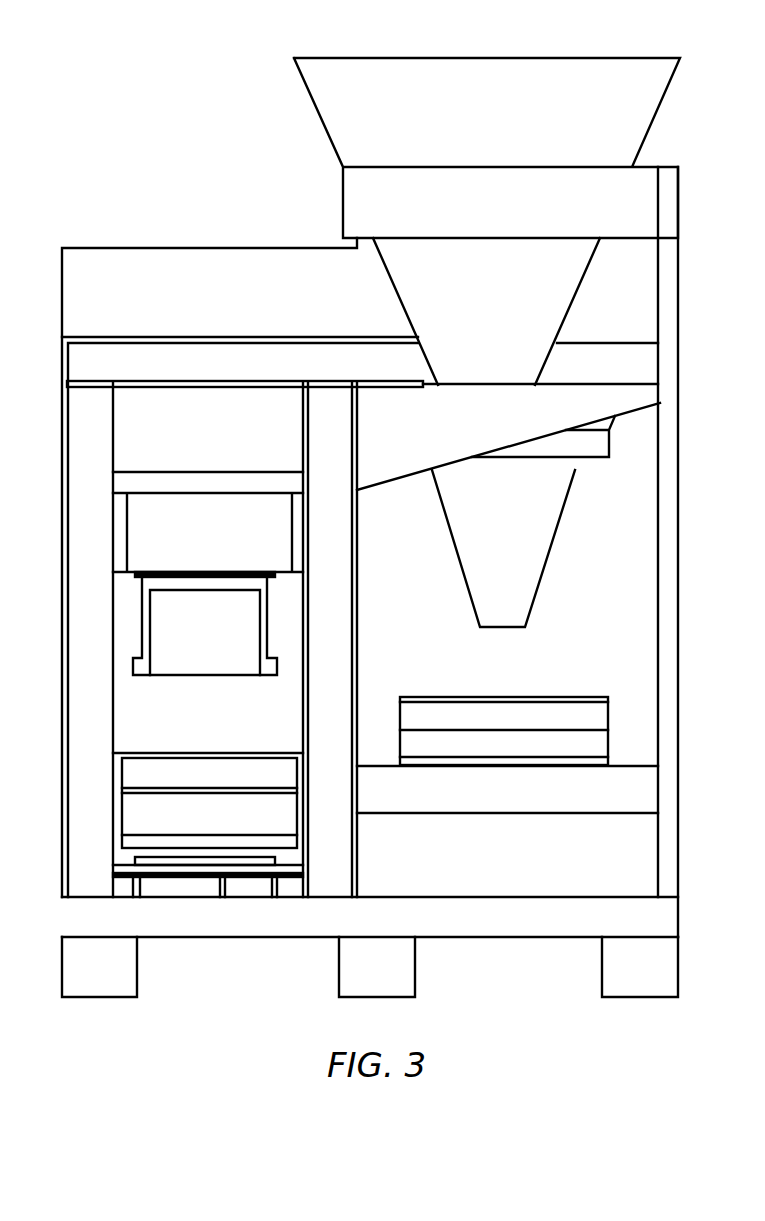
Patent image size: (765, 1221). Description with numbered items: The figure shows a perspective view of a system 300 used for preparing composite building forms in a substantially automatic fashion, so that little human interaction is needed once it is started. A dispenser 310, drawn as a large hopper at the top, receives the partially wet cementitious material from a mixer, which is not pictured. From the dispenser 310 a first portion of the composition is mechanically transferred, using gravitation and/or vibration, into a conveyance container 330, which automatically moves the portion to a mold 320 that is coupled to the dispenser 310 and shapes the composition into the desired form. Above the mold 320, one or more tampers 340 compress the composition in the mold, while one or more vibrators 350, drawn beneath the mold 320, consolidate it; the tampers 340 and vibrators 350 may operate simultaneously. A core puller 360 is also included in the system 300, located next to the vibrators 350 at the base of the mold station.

The system 300 is at (103, 163).
The dispenser 310 is at (498, 66).
The mold 320 is at (164, 759).
The conveyance container 330 is at (533, 697).
The tamper 340 is at (232, 676).
The vibrator 350 is at (226, 880).
The core puller 360 is at (182, 866).